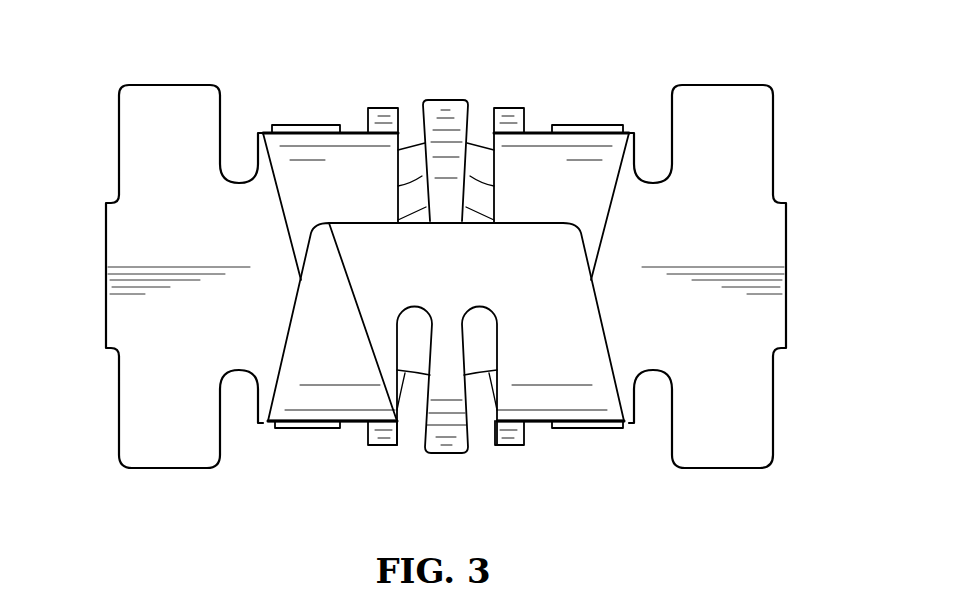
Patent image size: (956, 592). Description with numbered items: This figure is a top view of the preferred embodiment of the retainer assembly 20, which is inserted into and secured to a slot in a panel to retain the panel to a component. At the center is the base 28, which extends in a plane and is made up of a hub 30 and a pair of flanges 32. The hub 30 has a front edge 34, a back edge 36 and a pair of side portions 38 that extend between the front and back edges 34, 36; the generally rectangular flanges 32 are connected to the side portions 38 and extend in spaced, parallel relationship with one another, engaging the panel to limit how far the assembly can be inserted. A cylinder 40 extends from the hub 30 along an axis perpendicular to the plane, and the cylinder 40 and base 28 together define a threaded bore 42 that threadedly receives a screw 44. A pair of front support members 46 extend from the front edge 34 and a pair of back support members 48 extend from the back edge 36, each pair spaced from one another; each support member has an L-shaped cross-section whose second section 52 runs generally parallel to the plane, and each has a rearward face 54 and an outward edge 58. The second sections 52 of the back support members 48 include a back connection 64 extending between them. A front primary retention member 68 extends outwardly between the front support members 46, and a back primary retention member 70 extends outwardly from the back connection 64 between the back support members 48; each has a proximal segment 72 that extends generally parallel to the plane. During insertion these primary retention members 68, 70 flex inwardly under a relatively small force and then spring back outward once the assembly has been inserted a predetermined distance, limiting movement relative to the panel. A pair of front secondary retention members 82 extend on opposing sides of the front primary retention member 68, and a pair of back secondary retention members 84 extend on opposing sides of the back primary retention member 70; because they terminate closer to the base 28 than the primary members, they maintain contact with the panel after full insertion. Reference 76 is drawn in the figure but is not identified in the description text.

The retainer assembly 20 is at (796, 65).
The base 28 is at (479, 131).
The hub 30 is at (474, 400).
The flanges 32 is at (138, 318).
The front edge 34 is at (412, 147).
The back edge 36 is at (418, 398).
The side portions 38 is at (248, 302).
The cylinder 40 is at (415, 398).
The bore 42 is at (485, 332).
The screw 44 is at (538, 436).
The front support members 46 is at (299, 122).
The back support members 48 is at (302, 435).
The second section 52 is at (337, 196).
The rearward face 54 is at (345, 131).
The outward edge 58 is at (634, 133).
The back connection 64 is at (452, 243).
The front primary retention member 68 is at (442, 88).
The back primary retention member 70 is at (441, 466).
The proximal segment 72 is at (445, 180).
The flange corner 76 is at (268, 131).
The front secondary retention members 82 is at (375, 108).
The back secondary retention members 84 is at (383, 445).